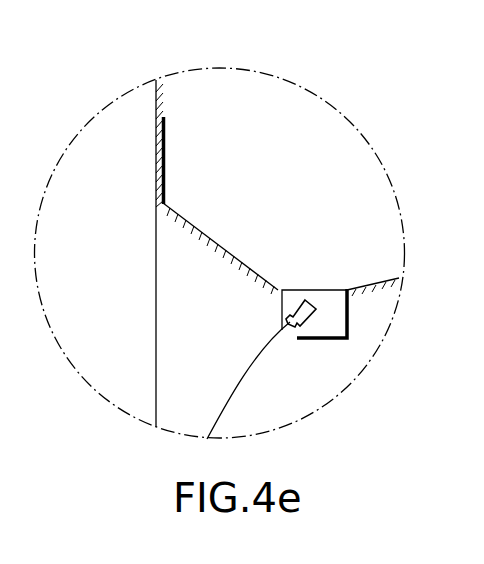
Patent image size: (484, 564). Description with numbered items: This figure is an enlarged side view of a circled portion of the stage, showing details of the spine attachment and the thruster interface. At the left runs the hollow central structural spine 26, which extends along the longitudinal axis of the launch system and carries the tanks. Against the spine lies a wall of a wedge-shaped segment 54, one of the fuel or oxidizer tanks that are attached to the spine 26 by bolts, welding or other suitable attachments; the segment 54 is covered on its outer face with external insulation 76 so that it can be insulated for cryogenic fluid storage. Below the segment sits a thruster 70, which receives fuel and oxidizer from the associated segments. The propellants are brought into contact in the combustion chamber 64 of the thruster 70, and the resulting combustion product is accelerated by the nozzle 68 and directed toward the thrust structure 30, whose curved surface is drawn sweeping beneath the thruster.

The central structural spine 26 is at (156, 278).
The external insulation 76 is at (160, 98).
The segment 54 is at (165, 166).
The combustion chamber 64 is at (327, 307).
The nozzle 68 is at (286, 324).
The thrust structure 30 is at (232, 396).
The thruster 70 is at (331, 338).